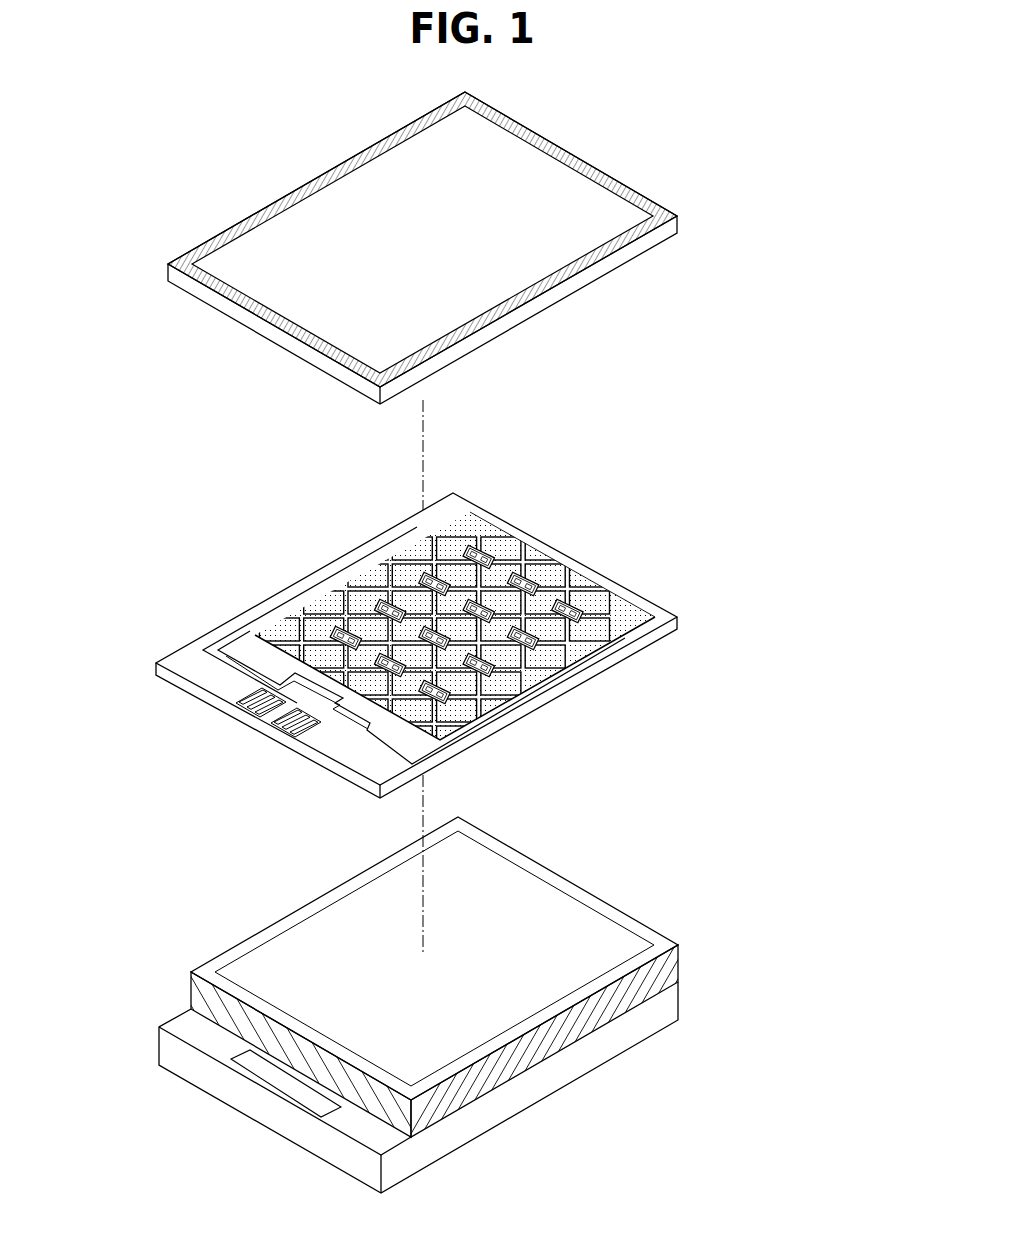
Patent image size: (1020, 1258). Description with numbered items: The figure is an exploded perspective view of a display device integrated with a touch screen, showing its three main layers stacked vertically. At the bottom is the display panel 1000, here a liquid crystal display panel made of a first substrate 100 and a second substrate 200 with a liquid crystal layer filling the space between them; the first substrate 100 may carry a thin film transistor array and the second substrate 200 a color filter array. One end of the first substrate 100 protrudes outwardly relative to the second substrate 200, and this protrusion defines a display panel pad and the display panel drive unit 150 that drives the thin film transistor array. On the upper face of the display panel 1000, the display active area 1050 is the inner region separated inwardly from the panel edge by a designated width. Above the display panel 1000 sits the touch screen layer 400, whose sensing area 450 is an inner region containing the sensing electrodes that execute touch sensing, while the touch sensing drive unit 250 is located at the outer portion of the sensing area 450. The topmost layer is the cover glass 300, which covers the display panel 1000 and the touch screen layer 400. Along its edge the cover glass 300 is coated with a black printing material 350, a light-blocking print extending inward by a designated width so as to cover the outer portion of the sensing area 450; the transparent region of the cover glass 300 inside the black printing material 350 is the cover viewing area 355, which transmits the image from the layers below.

The first substrate 100 is at (455, 1087).
The display panel drive unit 150 is at (281, 1090).
The second substrate 200 is at (456, 986).
The touch sensing drive unit 250 is at (307, 742).
The cover glass 300 is at (432, 248).
The black printing material 350 is at (630, 190).
The cover viewing area 355 is at (363, 190).
The touch screen layer 400 is at (426, 649).
The sensing area 450 is at (627, 607).
The display panel 1000 is at (485, 1005).
The display active area 1050 is at (612, 922).